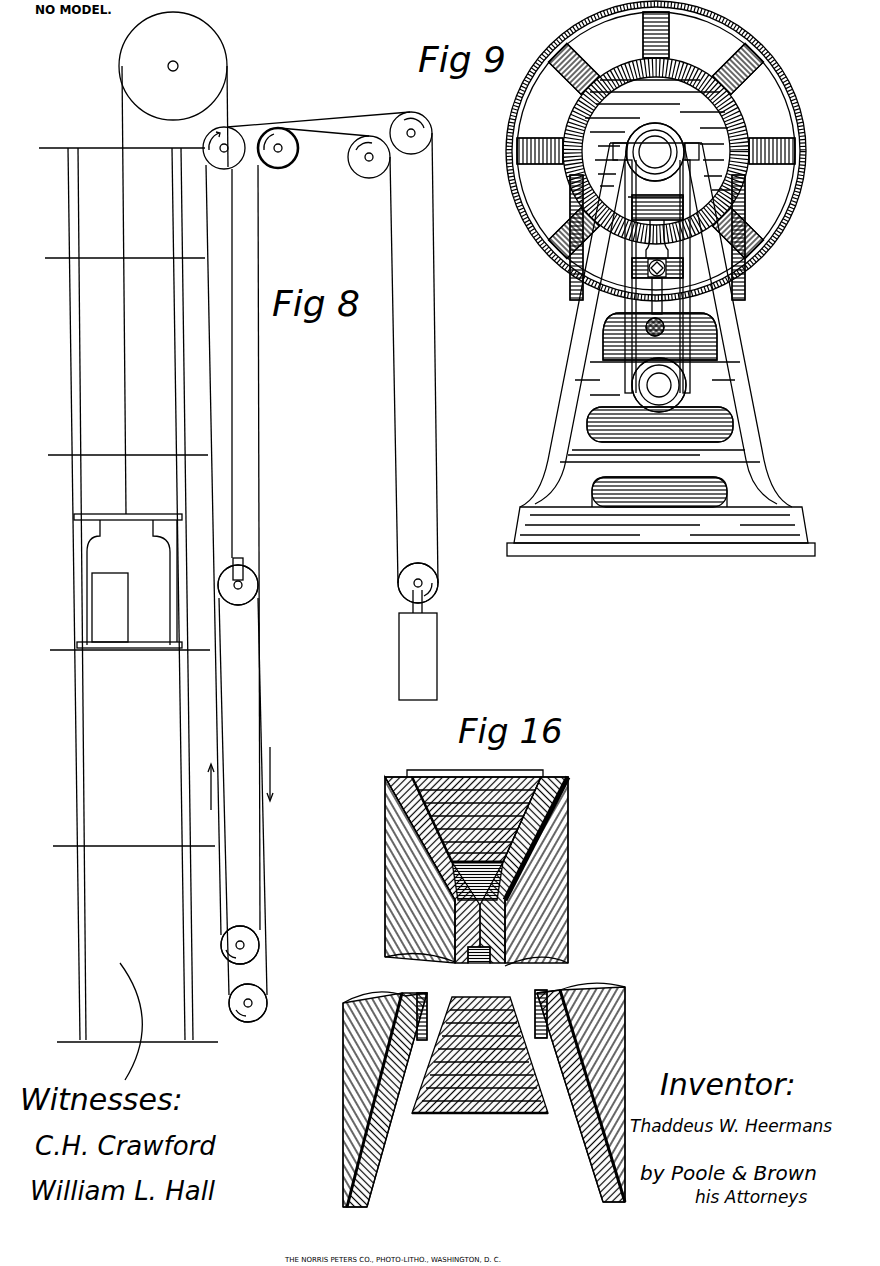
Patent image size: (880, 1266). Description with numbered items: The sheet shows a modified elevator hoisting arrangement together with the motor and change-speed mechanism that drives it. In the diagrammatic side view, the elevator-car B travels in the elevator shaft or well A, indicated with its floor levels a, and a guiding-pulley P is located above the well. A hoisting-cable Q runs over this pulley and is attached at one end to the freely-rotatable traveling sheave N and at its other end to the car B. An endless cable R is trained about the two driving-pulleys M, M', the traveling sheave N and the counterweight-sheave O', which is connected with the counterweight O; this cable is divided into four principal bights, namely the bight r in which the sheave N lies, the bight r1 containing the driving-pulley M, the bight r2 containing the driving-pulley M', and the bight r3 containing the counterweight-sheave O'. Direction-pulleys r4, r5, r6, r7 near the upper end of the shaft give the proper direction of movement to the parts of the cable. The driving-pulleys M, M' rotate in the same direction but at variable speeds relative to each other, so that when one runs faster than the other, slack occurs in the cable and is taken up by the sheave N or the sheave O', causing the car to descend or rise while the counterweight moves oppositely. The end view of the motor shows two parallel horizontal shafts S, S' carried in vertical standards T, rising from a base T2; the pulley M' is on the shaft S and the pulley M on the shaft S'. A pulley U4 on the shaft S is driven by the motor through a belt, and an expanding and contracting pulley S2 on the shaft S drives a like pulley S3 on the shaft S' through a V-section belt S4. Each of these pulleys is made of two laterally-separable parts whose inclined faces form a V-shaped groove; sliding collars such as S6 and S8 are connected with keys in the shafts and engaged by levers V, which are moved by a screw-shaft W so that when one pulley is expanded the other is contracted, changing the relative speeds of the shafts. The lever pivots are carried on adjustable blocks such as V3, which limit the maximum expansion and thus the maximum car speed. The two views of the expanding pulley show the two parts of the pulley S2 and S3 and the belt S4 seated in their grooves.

In FIG. 8, the guiding-pulley P is at (215, 66).
In FIG. 8, the elevator shaft or well A is at (70, 421).
In FIG. 8, the floor levels a is at (169, 564).
In FIG. 8, the elevator-car B is at (128, 581).
In FIG. 8, the hoisting-cable Q is at (236, 398).
In FIG. 8, the endless cable R is at (263, 494).
In FIG. 8, the traveling sheave N is at (255, 580).
In FIG. 8, the bight r is at (221, 604).
In FIG. 8, the bight r1 is at (228, 995).
In FIG. 8, the bight r2 is at (218, 927).
In FIG. 8, the bight r3 is at (398, 582).
In FIG. 8, the direction-pulley r4 is at (236, 130).
In FIG. 8, the direction-pulley r5 is at (286, 137).
In FIG. 8, the direction-pulley r6 is at (363, 168).
In FIG. 8, the direction-pulley r7 is at (414, 113).
In FIG. 8, the driving-pulley M is at (247, 1023).
In FIG. 8, the driving-pulley M' is at (270, 945).
In FIG. 8, the counterweight O is at (437, 645).
In FIG. 8, the counterweight-sheave O' is at (433, 573).
In FIG. 9, the pulley U4 is at (643, 36).
In FIG. 9, the shaft S is at (655, 152).
In FIG. 9, the shaft S' is at (660, 400).
In FIG. 9, the collar S6 is at (667, 136).
In FIG. 9, the collar S8 is at (683, 387).
In FIG. 9, the vertical standard T is at (573, 383).
In FIG. 9, the frame base T2 is at (661, 516).
In FIG. 9, the lever V is at (655, 276).
In FIG. 9, the block V3 is at (556, 272).
In FIG. 9, the screw-shaft W is at (643, 312).
In FIG. 16, the pulley S2 is at (567, 790).
In FIG. 16, the pulley S3 is at (588, 1046).
In FIG. 9, the belt S4 is at (744, 282).
In FIG. 16, the belt S4 is at (441, 888).